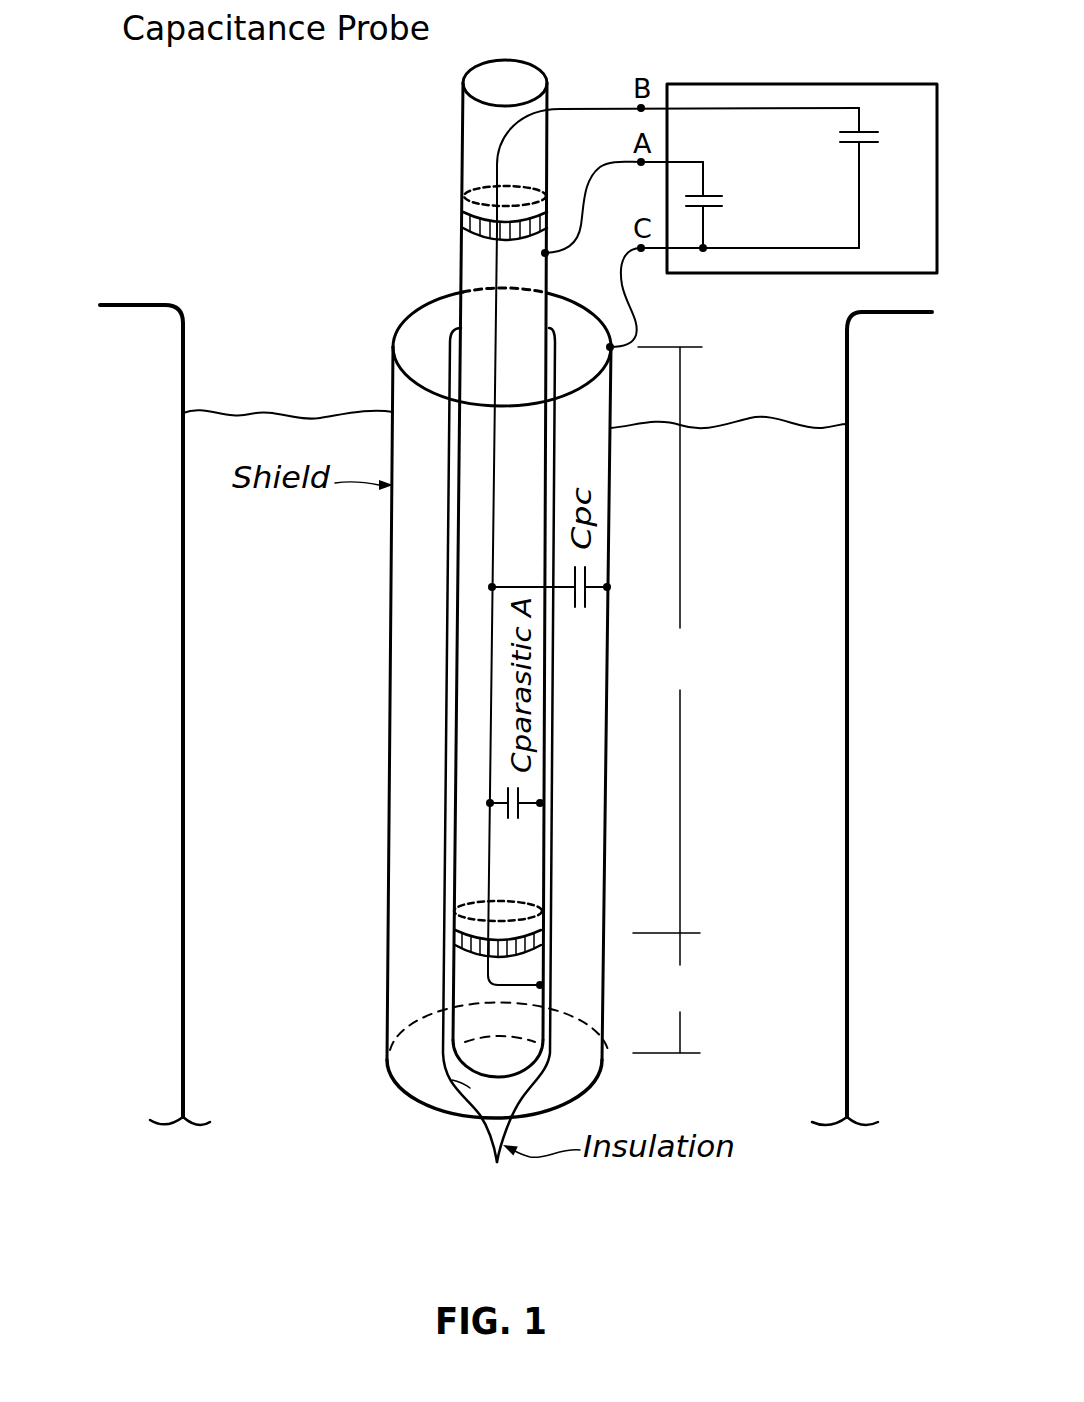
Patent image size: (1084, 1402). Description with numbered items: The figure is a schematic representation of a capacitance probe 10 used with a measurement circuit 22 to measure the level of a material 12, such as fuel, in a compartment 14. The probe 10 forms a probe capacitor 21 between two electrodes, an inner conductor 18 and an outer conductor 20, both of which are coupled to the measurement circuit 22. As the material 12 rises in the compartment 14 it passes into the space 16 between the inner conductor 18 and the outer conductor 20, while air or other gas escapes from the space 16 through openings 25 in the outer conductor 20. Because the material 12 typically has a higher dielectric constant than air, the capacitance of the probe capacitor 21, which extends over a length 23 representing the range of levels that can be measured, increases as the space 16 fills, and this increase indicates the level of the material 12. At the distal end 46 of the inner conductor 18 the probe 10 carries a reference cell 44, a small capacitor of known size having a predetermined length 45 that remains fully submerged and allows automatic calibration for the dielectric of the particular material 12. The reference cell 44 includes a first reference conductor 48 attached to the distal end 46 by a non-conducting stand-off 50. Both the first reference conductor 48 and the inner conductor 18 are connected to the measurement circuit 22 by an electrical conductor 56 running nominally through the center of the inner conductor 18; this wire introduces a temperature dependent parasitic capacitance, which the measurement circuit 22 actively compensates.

The capacitance probe 10 is at (252, 338).
The material 12 is at (783, 493).
The compartment 14 is at (848, 400).
The space 16 is at (591, 869).
The inner conductor 18 is at (548, 256).
The outer conductor 20 is at (611, 350).
The probe capacitor 21 is at (533, 544).
The measurement circuit 22 is at (920, 263).
The length 23 is at (667, 640).
The openings 25 is at (419, 338).
The reference cell 44 is at (513, 1031).
The length 45 is at (666, 993).
The distal end 46 is at (455, 1080).
The first reference conductor 48 is at (550, 1035).
The non-conducting stand-off 50 is at (448, 206).
The electrical conductor 56 is at (487, 845).